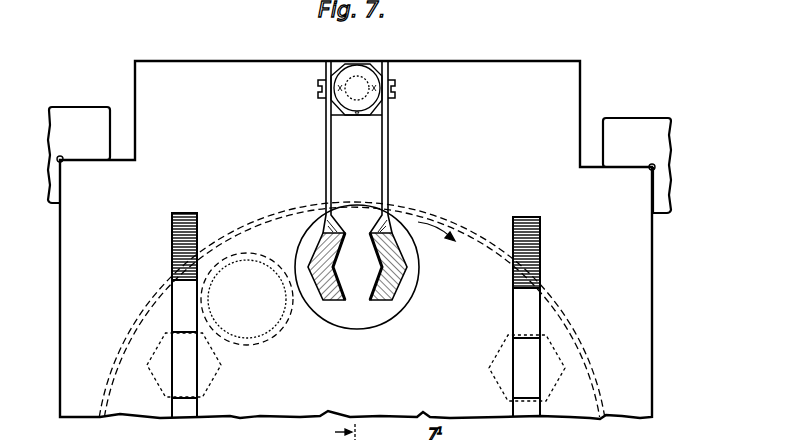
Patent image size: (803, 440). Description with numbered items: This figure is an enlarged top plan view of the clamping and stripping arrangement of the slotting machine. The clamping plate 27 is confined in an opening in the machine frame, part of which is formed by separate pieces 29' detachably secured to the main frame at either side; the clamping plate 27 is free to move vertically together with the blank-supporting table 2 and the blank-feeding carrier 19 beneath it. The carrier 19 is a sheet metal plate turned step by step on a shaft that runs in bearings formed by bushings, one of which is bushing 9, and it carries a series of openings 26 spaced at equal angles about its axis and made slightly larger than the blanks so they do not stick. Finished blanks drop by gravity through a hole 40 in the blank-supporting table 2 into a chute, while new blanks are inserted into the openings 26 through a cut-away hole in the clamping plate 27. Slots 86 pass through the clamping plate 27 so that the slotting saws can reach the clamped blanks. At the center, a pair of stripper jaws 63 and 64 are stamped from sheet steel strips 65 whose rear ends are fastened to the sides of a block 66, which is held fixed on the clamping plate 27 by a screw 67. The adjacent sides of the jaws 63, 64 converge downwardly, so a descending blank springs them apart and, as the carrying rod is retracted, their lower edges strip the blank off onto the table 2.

The blank-supporting table 2 is at (600, 374).
The bushing 9 is at (337, 429).
The blank-feeding carrier 19 is at (590, 352).
The openings 26 is at (212, 381).
The clamping plate 27 is at (72, 304).
The separate pieces 29' is at (79, 140).
The hole 40 is at (243, 265).
The stripper jaw 63 is at (330, 290).
The stripper jaw 64 is at (393, 288).
The sheet steel strips 65 is at (326, 149).
The block 66 is at (378, 108).
The screw 67 is at (318, 90).
The slots 86 is at (180, 304).